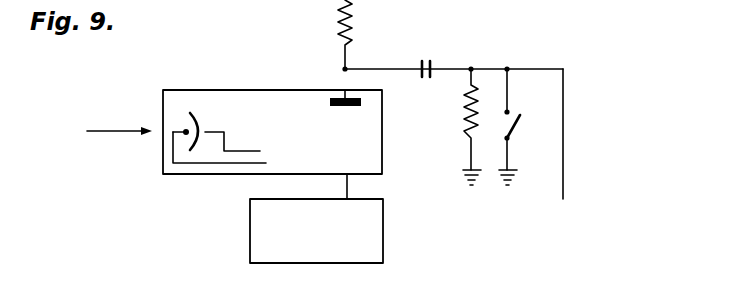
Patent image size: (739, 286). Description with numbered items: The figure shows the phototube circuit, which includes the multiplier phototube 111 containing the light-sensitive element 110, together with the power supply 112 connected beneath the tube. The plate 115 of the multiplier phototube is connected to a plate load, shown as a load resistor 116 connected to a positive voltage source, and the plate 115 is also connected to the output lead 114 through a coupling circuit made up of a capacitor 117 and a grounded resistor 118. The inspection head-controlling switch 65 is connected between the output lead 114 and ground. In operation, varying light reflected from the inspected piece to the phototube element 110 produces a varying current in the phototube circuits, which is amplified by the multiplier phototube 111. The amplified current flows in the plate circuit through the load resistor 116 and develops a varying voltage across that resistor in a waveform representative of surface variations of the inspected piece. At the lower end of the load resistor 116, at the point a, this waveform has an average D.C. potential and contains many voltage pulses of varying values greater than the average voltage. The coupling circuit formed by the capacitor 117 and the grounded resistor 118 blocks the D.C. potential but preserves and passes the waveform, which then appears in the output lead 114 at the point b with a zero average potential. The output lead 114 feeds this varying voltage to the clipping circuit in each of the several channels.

The light-sensitive element 110 is at (193, 119).
The multiplier phototube 111 is at (382, 157).
The power supply 112 is at (373, 250).
The output lead 114 is at (563, 171).
The plate 115 is at (362, 102).
The load resistor 116 is at (339, 16).
The capacitor 117 is at (433, 64).
The grounded resistor 118 is at (463, 118).
The inspection head-controlling switch 65 is at (514, 126).
The point a is at (371, 68).
The point b is at (490, 68).